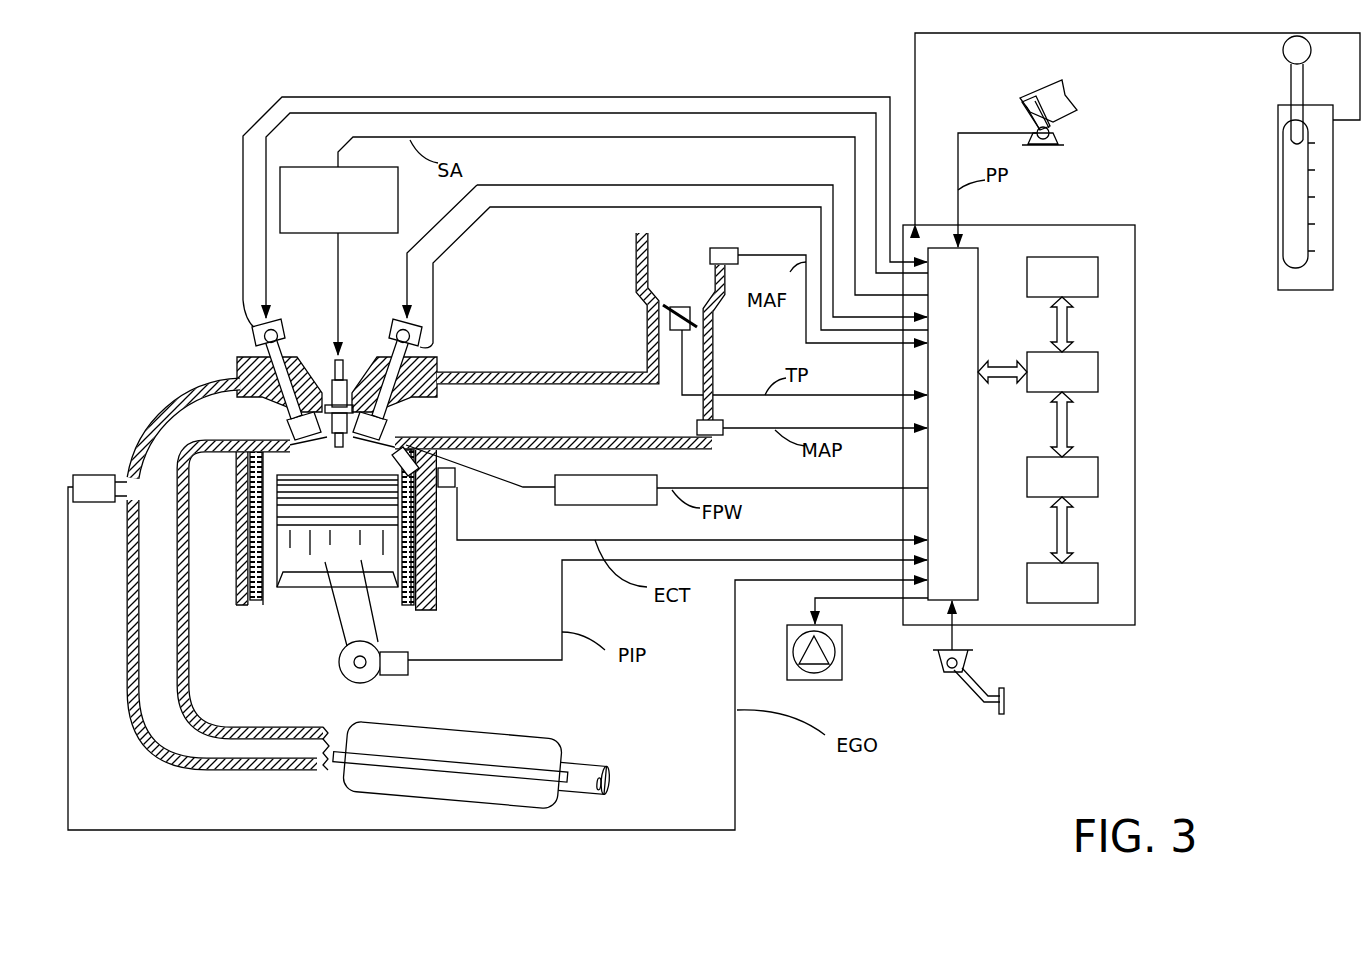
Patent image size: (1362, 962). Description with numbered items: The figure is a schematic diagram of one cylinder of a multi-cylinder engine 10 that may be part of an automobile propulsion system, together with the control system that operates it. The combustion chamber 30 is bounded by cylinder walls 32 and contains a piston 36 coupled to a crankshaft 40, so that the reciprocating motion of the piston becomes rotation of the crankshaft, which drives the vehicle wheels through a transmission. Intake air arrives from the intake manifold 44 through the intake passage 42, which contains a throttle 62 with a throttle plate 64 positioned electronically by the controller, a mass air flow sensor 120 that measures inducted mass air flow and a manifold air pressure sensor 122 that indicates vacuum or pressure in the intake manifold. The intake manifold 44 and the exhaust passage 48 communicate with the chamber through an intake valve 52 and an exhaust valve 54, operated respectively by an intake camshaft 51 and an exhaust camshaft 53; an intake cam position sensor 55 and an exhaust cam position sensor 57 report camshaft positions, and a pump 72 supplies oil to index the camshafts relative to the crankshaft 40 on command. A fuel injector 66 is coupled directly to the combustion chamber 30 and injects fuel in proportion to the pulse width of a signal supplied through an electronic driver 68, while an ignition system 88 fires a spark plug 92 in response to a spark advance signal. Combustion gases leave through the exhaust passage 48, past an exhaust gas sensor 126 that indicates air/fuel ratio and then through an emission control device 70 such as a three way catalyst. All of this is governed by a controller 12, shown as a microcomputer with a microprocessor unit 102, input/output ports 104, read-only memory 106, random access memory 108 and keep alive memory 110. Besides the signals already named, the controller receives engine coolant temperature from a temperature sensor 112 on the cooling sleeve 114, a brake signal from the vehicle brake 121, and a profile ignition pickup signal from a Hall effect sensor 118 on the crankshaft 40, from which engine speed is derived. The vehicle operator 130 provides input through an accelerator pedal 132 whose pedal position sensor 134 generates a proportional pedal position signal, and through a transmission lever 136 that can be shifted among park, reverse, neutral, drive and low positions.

The engine 10 is at (176, 307).
The controller 12 is at (1128, 225).
The combustion chamber 30 is at (260, 557).
The cylinder walls 32 is at (280, 600).
The piston 36 is at (317, 592).
The crankshaft 40 is at (352, 682).
The intake passage 42 is at (692, 340).
The intake manifold 44 is at (553, 338).
The exhaust passage 48 is at (253, 568).
The intake camshaft 51 is at (398, 302).
The intake valve 52 is at (388, 426).
The exhaust camshaft 53 is at (278, 300).
The exhaust valve 54 is at (284, 425).
The intake cam position sensor 55 is at (420, 343).
The exhaust cam position sensor 57 is at (252, 343).
The throttle 62 is at (696, 318).
The throttle plate 64 is at (660, 310).
The fuel injector 66 is at (442, 455).
The electronic driver 68 is at (580, 505).
The emission control device 70 is at (520, 740).
The pump 72 is at (832, 600).
The ignition system 88 is at (297, 166).
The spark plug 92 is at (342, 360).
The microprocessor unit 102 is at (1100, 372).
The input/output ports 104 is at (985, 256).
The read-only memory 106 is at (1100, 277).
The random access memory 108 is at (1100, 477).
The keep alive memory 110 is at (1100, 582).
The temperature sensor 112 is at (457, 488).
The cooling sleeve 114 is at (437, 567).
The Hall effect sensor 118 is at (395, 678).
The mass air flow sensor 120 is at (732, 248).
The vehicle brake 121 is at (946, 663).
The manifold air pressure sensor 122 is at (718, 437).
The exhaust gas sensor 126 is at (105, 475).
The vehicle operator 130 is at (1078, 97).
The accelerator pedal 132 is at (1022, 107).
The pedal position sensor 134 is at (1062, 133).
The transmission lever 136 is at (1290, 90).